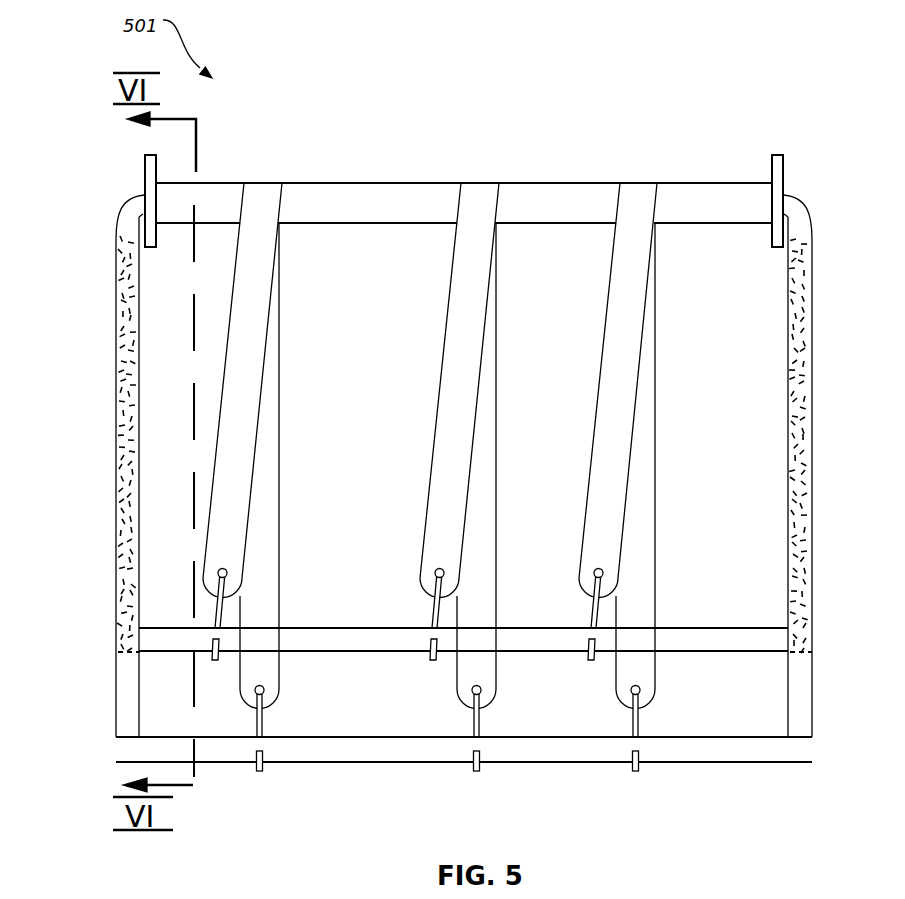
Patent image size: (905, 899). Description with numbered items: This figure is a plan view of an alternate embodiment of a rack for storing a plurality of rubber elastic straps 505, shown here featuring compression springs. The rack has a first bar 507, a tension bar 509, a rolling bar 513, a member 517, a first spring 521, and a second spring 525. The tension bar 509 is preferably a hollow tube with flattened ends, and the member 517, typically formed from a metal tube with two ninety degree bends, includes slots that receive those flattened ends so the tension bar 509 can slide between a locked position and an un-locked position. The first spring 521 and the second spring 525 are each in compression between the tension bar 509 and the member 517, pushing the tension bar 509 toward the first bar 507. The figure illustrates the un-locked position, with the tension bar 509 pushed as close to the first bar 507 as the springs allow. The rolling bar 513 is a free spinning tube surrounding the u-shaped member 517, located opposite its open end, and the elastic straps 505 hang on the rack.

The rubber elastic straps 505 is at (280, 310).
The first bar 507 is at (417, 736).
The tension bar 509 is at (387, 627).
The rolling bar 513 is at (318, 183).
The member 517 is at (142, 193).
The first spring 521 is at (130, 467).
The second spring 525 is at (800, 488).